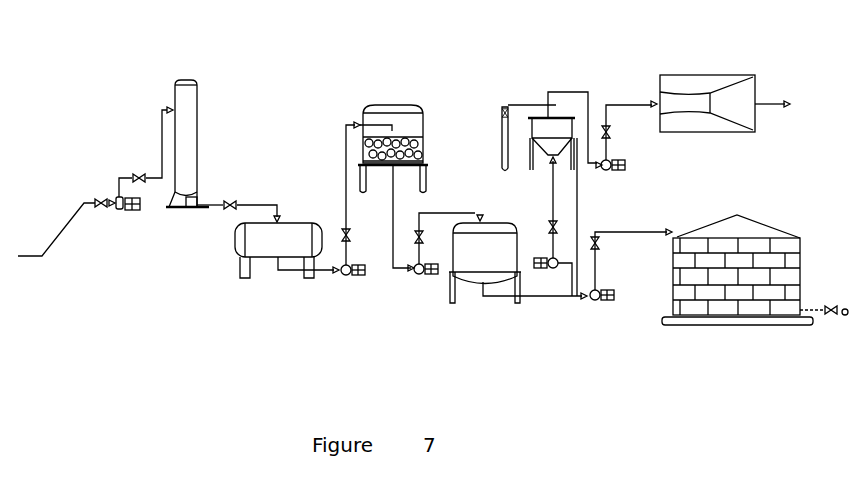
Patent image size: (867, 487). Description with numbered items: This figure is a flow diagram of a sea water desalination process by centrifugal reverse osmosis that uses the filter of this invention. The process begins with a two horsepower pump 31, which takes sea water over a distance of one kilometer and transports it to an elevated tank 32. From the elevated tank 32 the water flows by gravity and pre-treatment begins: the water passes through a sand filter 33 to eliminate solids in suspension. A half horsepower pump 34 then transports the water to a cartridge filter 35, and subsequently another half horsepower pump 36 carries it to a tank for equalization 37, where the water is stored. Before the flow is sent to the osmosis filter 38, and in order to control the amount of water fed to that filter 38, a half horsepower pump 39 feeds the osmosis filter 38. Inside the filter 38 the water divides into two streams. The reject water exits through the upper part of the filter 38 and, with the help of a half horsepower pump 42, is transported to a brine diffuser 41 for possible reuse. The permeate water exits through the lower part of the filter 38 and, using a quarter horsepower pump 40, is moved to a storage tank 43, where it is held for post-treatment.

The two HP pump 31 is at (131, 224).
The elevated tank 32 is at (187, 62).
The sand filter 33 is at (263, 263).
The 0.5 HP pump 34 is at (354, 284).
The cartridge filter 35 is at (401, 89).
The 0.5 HP pump 36 is at (424, 286).
The tank for Equalization 37 is at (471, 289).
The osmosis filter 38 is at (552, 69).
The 0.5 HP pump 39 is at (556, 282).
The 0.25 HP pump 40 is at (618, 309).
The brine diffuser 41 is at (720, 65).
The 0.5 HP pump 42 is at (646, 170).
The storage tank 43 is at (741, 334).